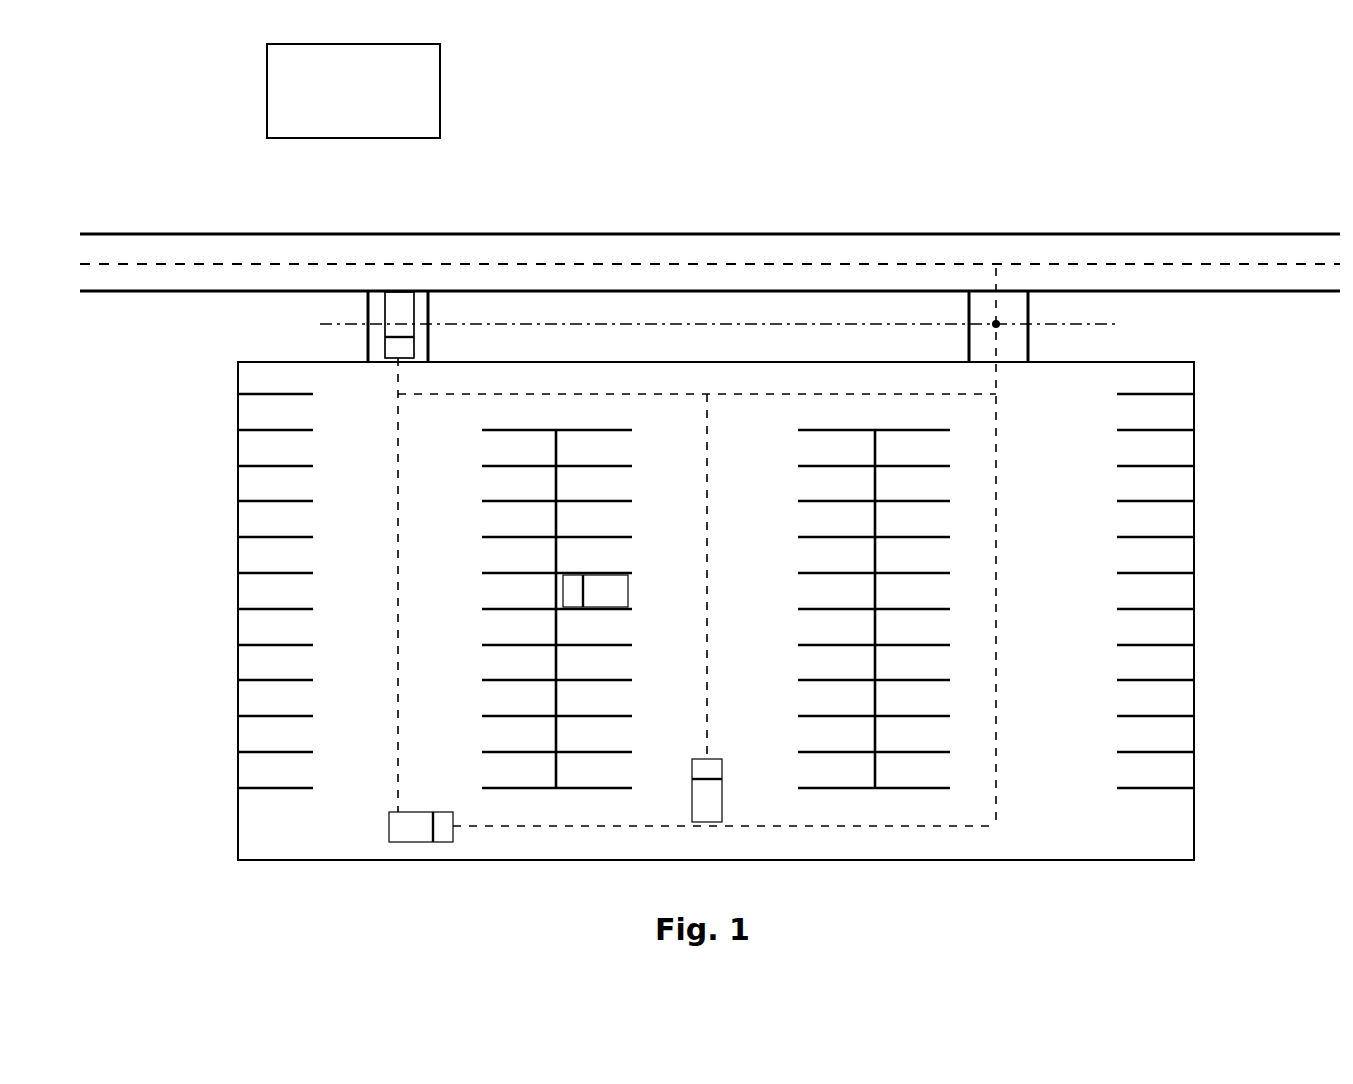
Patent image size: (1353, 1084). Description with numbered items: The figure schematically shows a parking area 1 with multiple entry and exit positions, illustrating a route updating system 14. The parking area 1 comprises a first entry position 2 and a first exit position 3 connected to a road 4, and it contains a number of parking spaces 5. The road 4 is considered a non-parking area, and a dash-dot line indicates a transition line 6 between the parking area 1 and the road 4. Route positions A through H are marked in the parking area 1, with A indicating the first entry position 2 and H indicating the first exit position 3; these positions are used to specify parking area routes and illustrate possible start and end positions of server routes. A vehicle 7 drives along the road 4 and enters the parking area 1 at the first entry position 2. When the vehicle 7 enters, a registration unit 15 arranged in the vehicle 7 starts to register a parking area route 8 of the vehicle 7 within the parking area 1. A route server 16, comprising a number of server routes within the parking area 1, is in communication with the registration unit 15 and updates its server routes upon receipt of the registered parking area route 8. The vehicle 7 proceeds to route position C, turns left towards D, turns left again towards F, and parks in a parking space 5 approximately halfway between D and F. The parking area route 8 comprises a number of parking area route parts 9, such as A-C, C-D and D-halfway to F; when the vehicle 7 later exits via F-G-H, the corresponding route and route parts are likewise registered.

The parking area 1 is at (237, 598).
The first entry position 2 is at (367, 345).
The first exit position 3 is at (1028, 343).
The road 4 is at (538, 234).
The parking spaces 5 is at (270, 763).
The transition line 6 is at (702, 325).
The vehicle 7 is at (398, 313).
The parking area route 8 is at (533, 830).
The parking area route parts 9 is at (398, 515).
The route updating system 14 is at (202, 160).
The registration unit 15 is at (402, 348).
The route server 16 is at (390, 278).